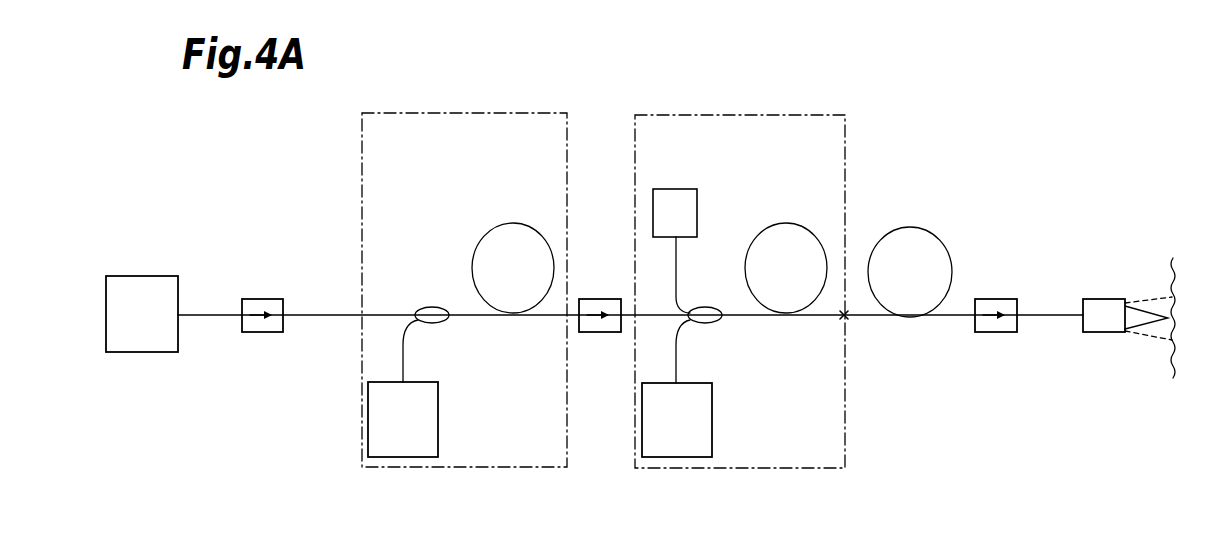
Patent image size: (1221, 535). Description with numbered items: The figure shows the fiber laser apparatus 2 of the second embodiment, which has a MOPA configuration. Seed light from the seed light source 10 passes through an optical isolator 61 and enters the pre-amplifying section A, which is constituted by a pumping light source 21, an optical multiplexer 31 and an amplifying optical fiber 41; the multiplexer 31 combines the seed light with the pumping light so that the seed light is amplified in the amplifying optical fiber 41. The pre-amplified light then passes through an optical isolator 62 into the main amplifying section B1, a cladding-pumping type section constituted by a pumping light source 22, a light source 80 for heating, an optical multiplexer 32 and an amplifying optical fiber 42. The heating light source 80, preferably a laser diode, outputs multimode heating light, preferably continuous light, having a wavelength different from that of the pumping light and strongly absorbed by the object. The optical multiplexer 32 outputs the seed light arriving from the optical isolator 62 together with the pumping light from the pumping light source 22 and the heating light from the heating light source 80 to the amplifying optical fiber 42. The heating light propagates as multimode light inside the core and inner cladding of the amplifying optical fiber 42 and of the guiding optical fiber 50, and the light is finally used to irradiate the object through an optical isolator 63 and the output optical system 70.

The fiber laser apparatus 2 is at (1028, 92).
The seed light source 10 is at (140, 276).
The optical isolator 61 is at (265, 299).
The pre-amplifying section A is at (545, 468).
The optical multiplexer 31 is at (430, 307).
The pumping light source 21 is at (438, 418).
The amplifying optical fiber 41 is at (513, 223).
The optical isolator 62 is at (598, 299).
The main amplifying section B1 is at (822, 468).
The light source for heating 80 is at (676, 189).
The optical multiplexer 32 is at (703, 307).
The pumping light source 22 is at (712, 418).
The amplifying optical fiber 42 is at (786, 223).
The guiding optical fiber 50 is at (910, 227).
The optical isolator 63 is at (995, 299).
The output optical system 70 is at (1105, 299).